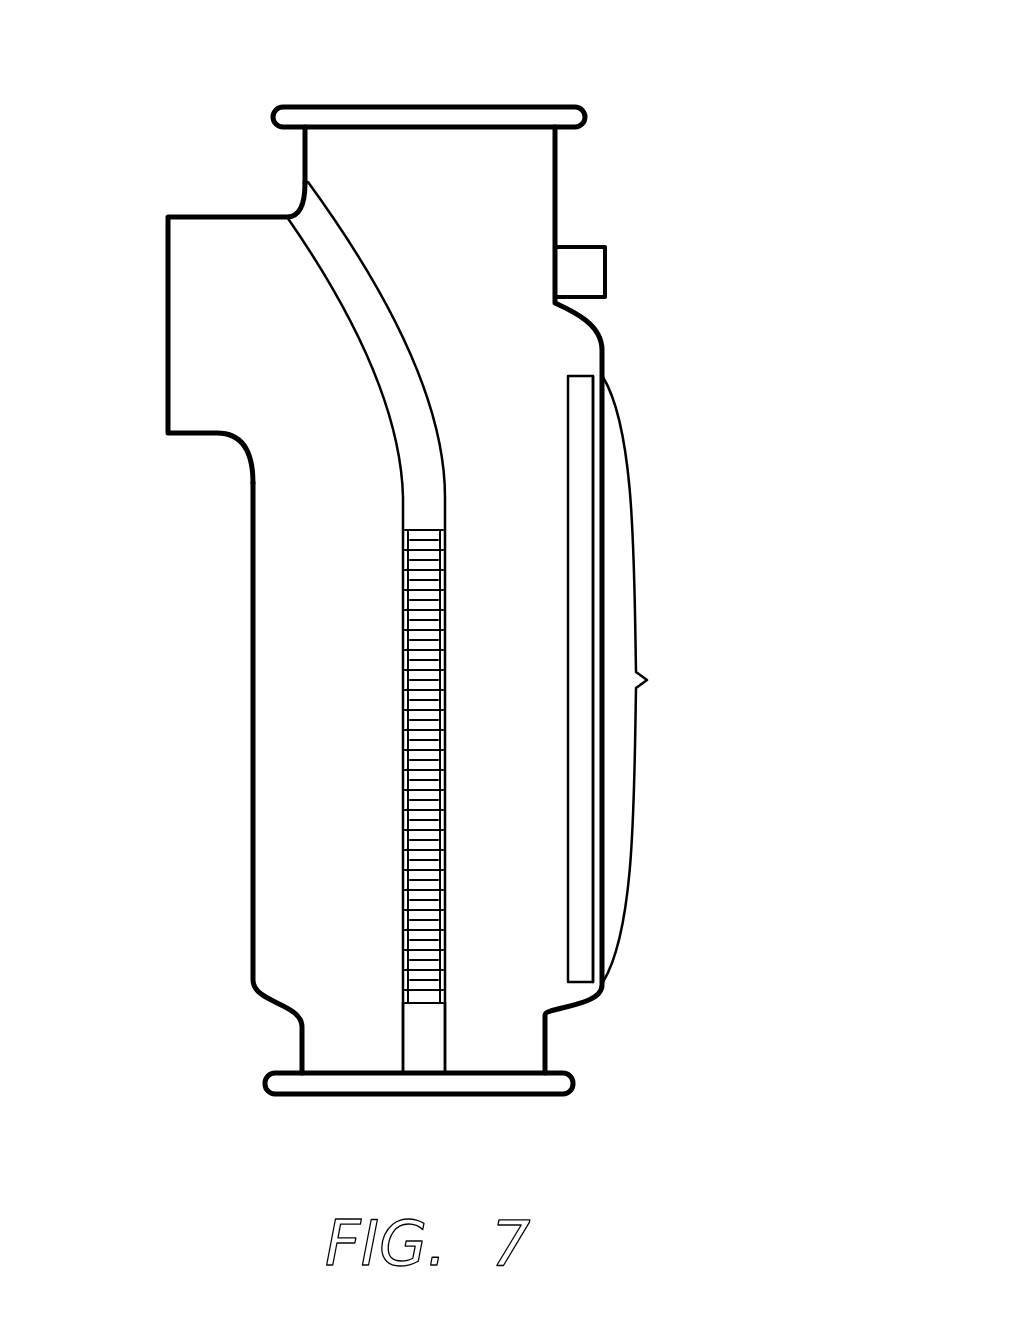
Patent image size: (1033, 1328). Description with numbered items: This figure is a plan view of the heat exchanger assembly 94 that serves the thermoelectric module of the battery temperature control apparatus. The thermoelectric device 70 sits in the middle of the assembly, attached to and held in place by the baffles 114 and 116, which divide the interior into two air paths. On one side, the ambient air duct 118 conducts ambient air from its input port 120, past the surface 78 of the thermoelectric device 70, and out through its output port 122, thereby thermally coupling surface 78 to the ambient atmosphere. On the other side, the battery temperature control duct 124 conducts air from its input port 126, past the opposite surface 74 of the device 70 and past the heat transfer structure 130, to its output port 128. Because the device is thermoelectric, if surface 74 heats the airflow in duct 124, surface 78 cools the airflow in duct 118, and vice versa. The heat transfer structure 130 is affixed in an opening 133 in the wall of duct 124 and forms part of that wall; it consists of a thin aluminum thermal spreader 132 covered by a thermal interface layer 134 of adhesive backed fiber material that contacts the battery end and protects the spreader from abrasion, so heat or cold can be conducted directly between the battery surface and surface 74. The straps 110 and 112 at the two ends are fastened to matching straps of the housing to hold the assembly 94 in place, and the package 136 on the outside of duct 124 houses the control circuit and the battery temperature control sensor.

The heat exchanger assembly 94 is at (172, 774).
The thermoelectric device 70 is at (420, 766).
The surface 74 is at (445, 763).
The surface 78 is at (420, 766).
The strap 110 is at (577, 1075).
The strap 112 is at (581, 108).
The baffle 114 is at (447, 1020).
The baffle 116 is at (354, 273).
The ambient air duct 118 is at (368, 534).
The input port 120 is at (330, 1062).
The output port 122 is at (193, 357).
The battery temperature control duct 124 is at (548, 526).
The input port 126 is at (490, 1060).
The output port 128 is at (407, 150).
The heat transfer structure 130 is at (710, 666).
The thermal spreader 132 is at (588, 410).
The opening 133 is at (667, 679).
The thermal interface layer 134 is at (598, 500).
The package 136 is at (580, 260).